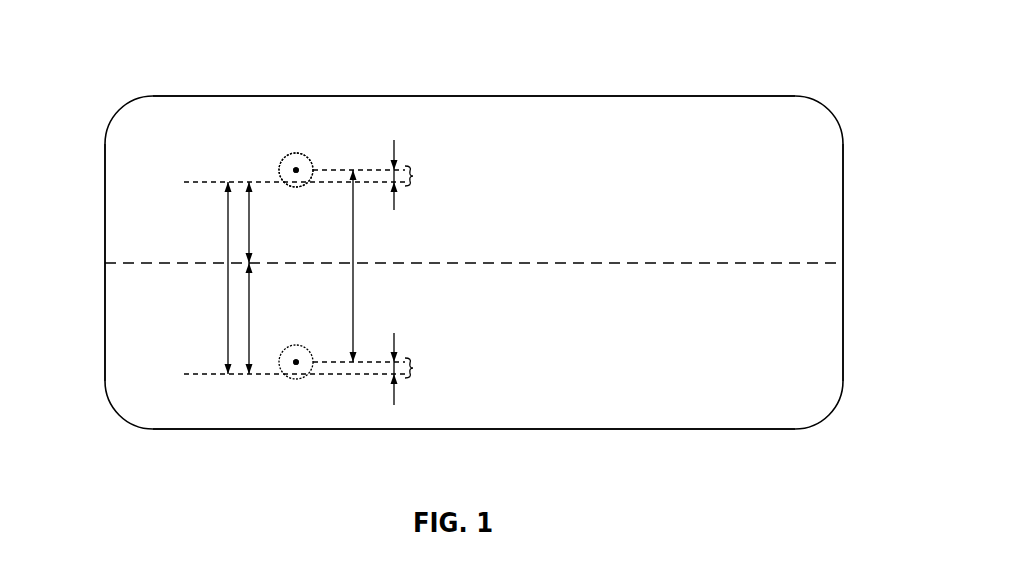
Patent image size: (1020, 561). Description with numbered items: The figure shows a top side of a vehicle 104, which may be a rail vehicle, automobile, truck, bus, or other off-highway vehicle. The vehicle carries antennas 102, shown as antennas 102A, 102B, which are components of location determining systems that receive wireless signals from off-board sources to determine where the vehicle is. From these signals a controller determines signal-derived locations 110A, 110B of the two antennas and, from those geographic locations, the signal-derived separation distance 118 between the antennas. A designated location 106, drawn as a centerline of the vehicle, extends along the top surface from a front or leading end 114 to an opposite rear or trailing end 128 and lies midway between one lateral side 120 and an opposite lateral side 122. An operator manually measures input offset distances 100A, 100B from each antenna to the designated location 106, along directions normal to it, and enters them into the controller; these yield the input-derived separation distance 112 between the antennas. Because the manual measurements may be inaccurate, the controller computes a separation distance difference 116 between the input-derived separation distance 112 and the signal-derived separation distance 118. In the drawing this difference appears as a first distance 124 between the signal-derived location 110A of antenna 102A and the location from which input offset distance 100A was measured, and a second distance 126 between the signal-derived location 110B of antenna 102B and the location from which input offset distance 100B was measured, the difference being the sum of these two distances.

The input offset distance 100A is at (250, 230).
The input offset distance 100B is at (250, 323).
The antennas 102 is at (277, 170).
The antenna 102A is at (296, 168).
The antenna 102B is at (296, 364).
The vehicle 104 is at (104, 352).
The designated location 106 is at (650, 266).
The signal-derived location 110A is at (290, 162).
The signal-derived location 110B is at (286, 375).
The input-derived separation distance 112 is at (227, 286).
The front or leading end 114 is at (104, 212).
The separation distance difference 116 is at (414, 180).
The signal-derived separation distance 118 is at (352, 226).
The lateral side 120 is at (461, 94).
The lateral side 122 is at (475, 431).
The first distance 124 is at (396, 150).
The second distance 126 is at (397, 343).
The rear or trailing end 128 is at (844, 230).